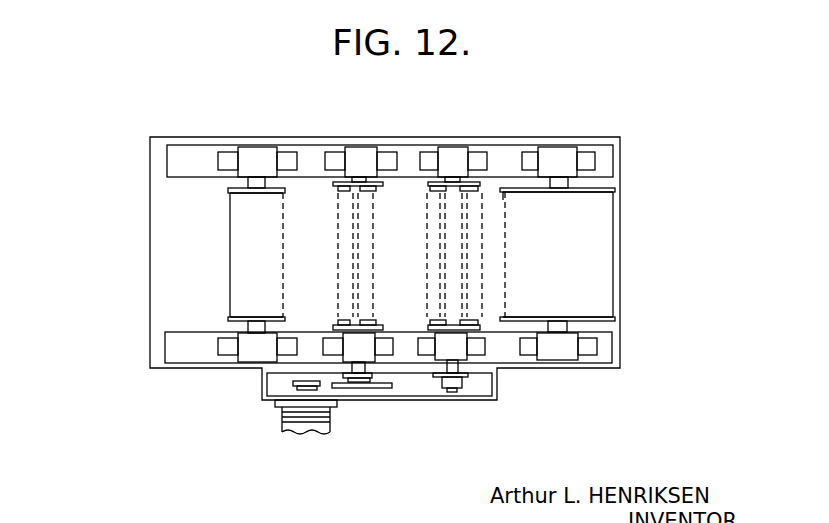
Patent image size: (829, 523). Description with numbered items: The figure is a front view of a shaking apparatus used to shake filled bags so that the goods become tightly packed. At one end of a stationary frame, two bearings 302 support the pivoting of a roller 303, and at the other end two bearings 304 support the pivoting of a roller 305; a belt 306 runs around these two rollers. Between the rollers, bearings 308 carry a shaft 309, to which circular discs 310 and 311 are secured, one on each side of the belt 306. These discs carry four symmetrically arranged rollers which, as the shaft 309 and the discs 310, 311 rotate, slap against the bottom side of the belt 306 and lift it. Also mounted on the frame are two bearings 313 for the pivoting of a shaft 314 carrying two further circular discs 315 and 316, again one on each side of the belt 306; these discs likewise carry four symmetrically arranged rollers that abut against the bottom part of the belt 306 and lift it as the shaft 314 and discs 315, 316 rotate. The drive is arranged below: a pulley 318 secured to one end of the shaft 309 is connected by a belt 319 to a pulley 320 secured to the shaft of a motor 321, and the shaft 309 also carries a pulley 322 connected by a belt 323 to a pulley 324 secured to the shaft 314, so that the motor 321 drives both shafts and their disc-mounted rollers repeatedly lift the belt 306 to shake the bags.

The bearings 302 is at (568, 158).
The roller 303 is at (620, 239).
The bearings 304 is at (246, 158).
The roller 305 is at (232, 243).
The belt 306 is at (497, 192).
The bearings 308 is at (352, 160).
The shaft 309 is at (363, 330).
The circular disc 310 is at (380, 185).
The circular disc 311 is at (372, 328).
The bearings 313 is at (458, 158).
The shaft 314 is at (453, 332).
The circular disc 315 is at (438, 185).
The circular disc 316 is at (482, 330).
The pulley 318 is at (338, 385).
The belt 319 is at (323, 388).
The pulley 320 is at (297, 383).
The motor 321 is at (282, 417).
The pulley 322 is at (342, 384).
The belt 323 is at (394, 378).
The pulley 324 is at (463, 380).